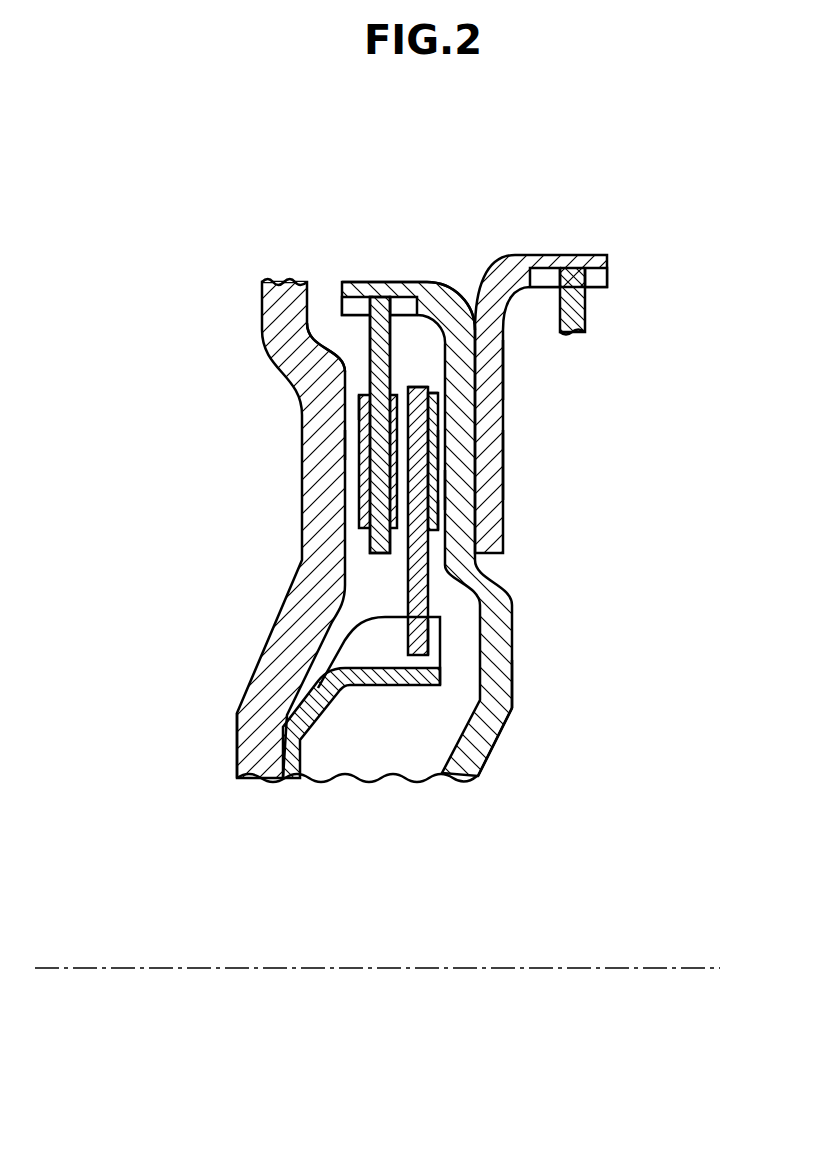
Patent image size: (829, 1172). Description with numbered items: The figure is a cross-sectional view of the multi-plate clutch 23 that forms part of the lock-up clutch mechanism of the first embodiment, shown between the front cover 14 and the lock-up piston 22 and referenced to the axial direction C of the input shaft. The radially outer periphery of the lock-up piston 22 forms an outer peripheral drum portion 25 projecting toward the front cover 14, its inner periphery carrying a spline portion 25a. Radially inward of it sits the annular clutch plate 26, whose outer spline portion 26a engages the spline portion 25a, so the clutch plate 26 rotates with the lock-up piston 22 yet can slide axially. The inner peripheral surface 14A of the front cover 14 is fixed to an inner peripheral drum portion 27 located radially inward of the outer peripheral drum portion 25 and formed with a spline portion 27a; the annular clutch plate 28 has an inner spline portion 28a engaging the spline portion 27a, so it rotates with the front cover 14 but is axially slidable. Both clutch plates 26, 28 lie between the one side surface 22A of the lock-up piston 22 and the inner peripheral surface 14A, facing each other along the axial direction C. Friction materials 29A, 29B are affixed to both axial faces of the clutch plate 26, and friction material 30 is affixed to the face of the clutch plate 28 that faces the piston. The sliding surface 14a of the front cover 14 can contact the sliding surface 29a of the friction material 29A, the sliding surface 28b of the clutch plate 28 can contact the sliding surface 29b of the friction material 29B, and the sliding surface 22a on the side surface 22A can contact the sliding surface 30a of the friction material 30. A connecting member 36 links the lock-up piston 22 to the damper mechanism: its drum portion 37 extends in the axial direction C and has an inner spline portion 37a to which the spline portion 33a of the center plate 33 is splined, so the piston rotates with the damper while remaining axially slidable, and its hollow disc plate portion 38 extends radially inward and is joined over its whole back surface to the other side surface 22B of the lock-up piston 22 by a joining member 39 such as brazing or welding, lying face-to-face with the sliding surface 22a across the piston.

The front cover 14 is at (282, 582).
The sliding surface 14a is at (345, 447).
The inner peripheral surface 14A is at (292, 693).
The lock-up piston 22 is at (535, 607).
The sliding surface 22a is at (449, 491).
The one side surface 22A is at (511, 707).
The other side surface 22B is at (513, 693).
The multi-plate clutch 23 is at (329, 262).
The outer peripheral drum portion 25 is at (439, 292).
The spline portion 25a is at (413, 305).
The clutch plate 26 is at (340, 370).
The spline portion 26a is at (372, 300).
The inner peripheral drum portion 27 is at (373, 685).
The spline portion 27a is at (348, 648).
The clutch plate 28 is at (430, 567).
The spline portion 28a is at (428, 642).
The sliding surface 28b is at (403, 392).
The friction material 29A is at (359, 456).
The sliding surface 29a is at (359, 516).
The friction material 29B is at (438, 413).
The sliding surface 29b is at (407, 392).
The friction material 30 is at (439, 513).
The sliding surface 30a is at (439, 450).
The center plate 33 is at (583, 310).
The spline portion 33a is at (572, 278).
The connecting member 36 is at (518, 233).
The drum portion 37 is at (526, 290).
The spline portion 37a is at (594, 276).
The hollow disc plate portion 38 is at (504, 463).
The joining member 39 is at (501, 373).
The axial direction C is at (712, 965).